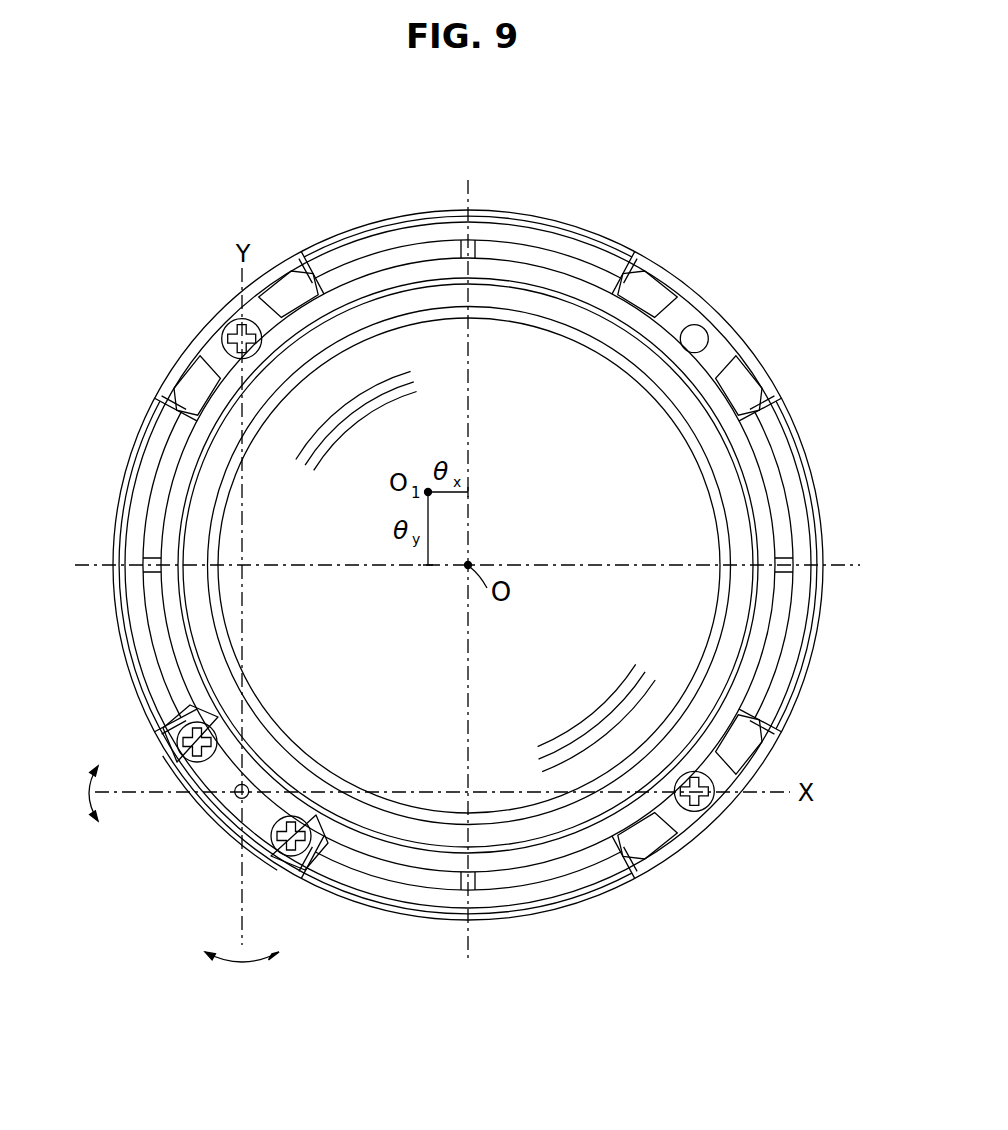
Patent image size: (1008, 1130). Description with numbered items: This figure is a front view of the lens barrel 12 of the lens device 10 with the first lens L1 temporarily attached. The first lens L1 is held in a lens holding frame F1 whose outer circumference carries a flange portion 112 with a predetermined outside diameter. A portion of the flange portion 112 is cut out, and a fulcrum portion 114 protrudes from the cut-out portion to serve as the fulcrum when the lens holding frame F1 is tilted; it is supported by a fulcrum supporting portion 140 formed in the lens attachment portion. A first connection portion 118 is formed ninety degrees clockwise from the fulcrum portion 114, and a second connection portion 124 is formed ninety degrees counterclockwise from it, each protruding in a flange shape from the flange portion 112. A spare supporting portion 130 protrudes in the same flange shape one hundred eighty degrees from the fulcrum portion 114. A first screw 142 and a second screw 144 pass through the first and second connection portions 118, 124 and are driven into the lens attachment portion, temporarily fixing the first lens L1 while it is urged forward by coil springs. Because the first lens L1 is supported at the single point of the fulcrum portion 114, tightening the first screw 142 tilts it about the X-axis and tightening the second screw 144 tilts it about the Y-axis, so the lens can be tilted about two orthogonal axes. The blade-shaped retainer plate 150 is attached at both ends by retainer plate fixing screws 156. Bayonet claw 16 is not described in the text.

The lens device 10 is at (683, 210).
The lens barrel 12 is at (619, 234).
The bayonet claw 16 is at (543, 224).
The flange portion 112 is at (766, 636).
The fulcrum portion 114 is at (260, 778).
The first connection portion 118 is at (212, 348).
The second connection portion 124 is at (688, 824).
The spare supporting portion 130 is at (723, 350).
The fulcrum supporting portion 140 is at (218, 850).
The first screw 142 is at (236, 330).
The second screw 144 is at (704, 803).
The retainer plate 150 is at (227, 809).
The retainer plate fixing screws 156 is at (178, 748).
The first lens L1 is at (228, 606).
The lens holding frame F1 is at (747, 520).